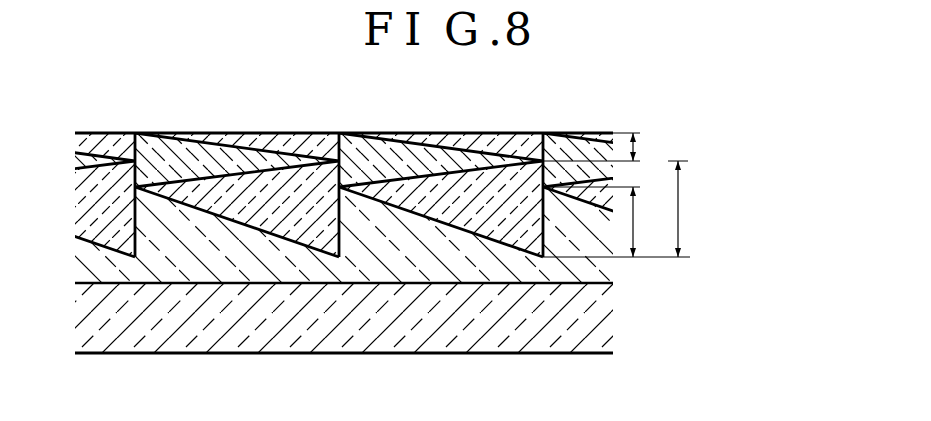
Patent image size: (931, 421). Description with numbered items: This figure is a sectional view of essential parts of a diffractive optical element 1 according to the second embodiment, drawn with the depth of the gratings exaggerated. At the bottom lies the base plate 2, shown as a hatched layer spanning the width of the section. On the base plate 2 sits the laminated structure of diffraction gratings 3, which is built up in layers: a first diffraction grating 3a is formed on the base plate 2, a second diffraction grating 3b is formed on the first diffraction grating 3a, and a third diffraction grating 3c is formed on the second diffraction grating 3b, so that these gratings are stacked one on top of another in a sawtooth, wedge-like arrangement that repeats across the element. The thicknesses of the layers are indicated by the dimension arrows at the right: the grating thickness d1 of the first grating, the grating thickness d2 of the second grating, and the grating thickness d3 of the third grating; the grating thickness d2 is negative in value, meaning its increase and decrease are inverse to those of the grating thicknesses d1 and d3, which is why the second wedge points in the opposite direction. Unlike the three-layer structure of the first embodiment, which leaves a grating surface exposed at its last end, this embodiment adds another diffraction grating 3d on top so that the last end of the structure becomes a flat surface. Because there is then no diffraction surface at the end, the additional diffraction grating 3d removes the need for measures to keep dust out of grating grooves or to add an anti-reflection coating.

The diffractive optical element 1 is at (805, 198).
The base plate 2 is at (585, 317).
The diffraction gratings 3 is at (732, 131).
The first diffraction grating 3a is at (187, 263).
The second diffraction grating 3b is at (283, 222).
The third diffraction grating 3c is at (181, 152).
The additional diffraction grating 3d is at (292, 132).
The grating thickness d1 is at (616, 222).
The grating thickness d2 is at (686, 209).
The grating thickness d3 is at (602, 152).